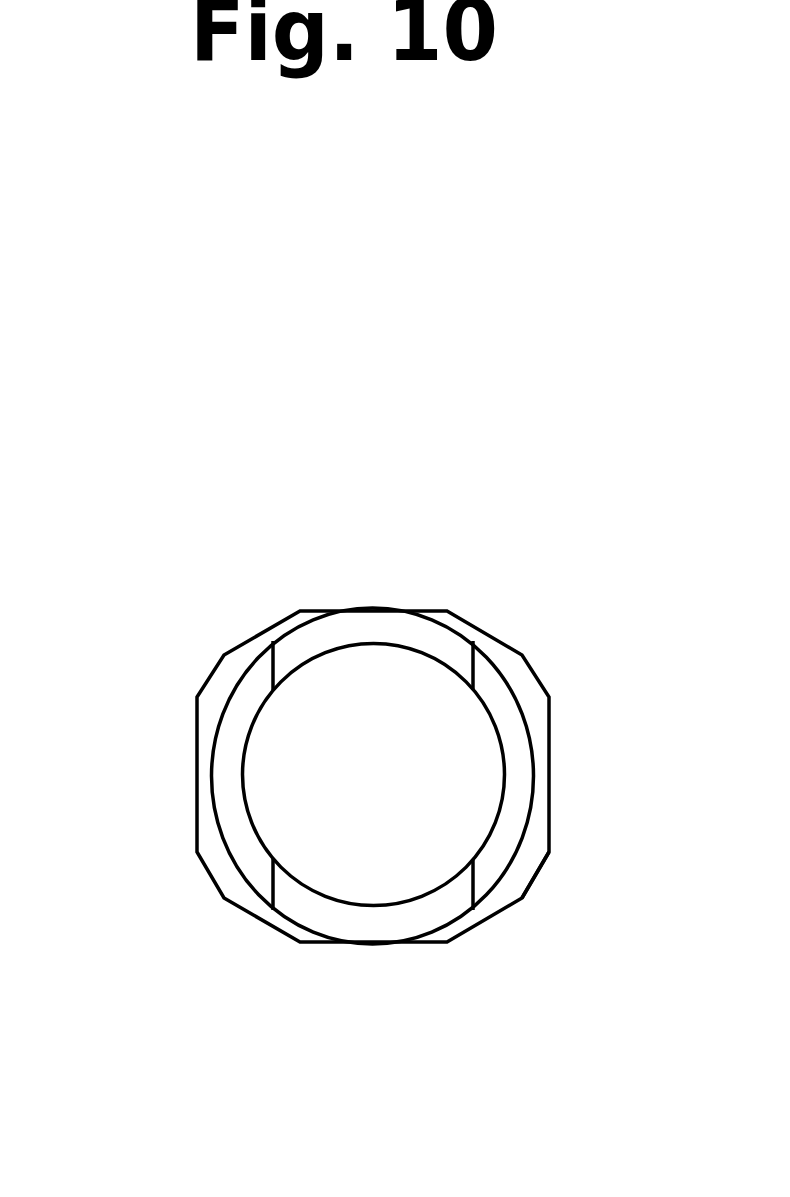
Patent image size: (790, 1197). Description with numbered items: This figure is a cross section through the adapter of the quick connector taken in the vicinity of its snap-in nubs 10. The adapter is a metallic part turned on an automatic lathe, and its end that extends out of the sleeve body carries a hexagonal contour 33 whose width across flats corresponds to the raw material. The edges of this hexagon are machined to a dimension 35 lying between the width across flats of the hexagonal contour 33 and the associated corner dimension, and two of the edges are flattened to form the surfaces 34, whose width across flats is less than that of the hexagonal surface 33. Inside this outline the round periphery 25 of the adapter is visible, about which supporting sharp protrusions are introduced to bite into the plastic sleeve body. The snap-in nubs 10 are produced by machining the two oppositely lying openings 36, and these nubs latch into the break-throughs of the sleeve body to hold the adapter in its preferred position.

The snap-in nubs 10 is at (388, 570).
The periphery of the adapter 25 is at (546, 692).
The hexagonal contour 33 is at (170, 825).
The flattened surfaces 34 is at (465, 578).
The machined edge dimension 35 is at (560, 912).
The openings 36 is at (254, 875).